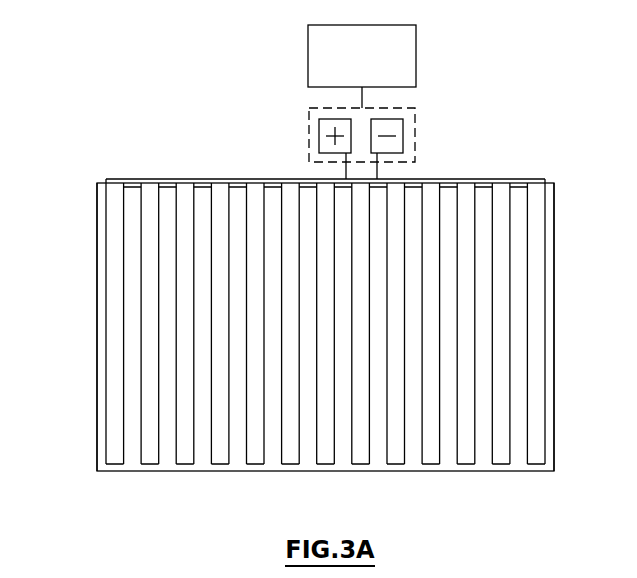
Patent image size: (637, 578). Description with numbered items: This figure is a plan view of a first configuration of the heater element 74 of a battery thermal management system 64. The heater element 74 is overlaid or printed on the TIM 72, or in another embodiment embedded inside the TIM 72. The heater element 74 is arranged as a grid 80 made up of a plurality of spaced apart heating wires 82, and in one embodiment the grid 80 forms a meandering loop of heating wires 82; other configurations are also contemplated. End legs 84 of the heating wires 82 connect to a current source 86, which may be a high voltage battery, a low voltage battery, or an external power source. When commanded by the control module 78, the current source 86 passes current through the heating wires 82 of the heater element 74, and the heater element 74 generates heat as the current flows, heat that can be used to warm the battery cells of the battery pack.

The battery thermal management system 64 is at (236, 136).
The TIM 72 is at (484, 462).
The heater element 74 is at (483, 198).
The control module 78 is at (418, 55).
The grid 80 is at (98, 350).
The heating wires 82 is at (493, 294).
The end legs 84 is at (346, 177).
The current source 86 is at (417, 134).